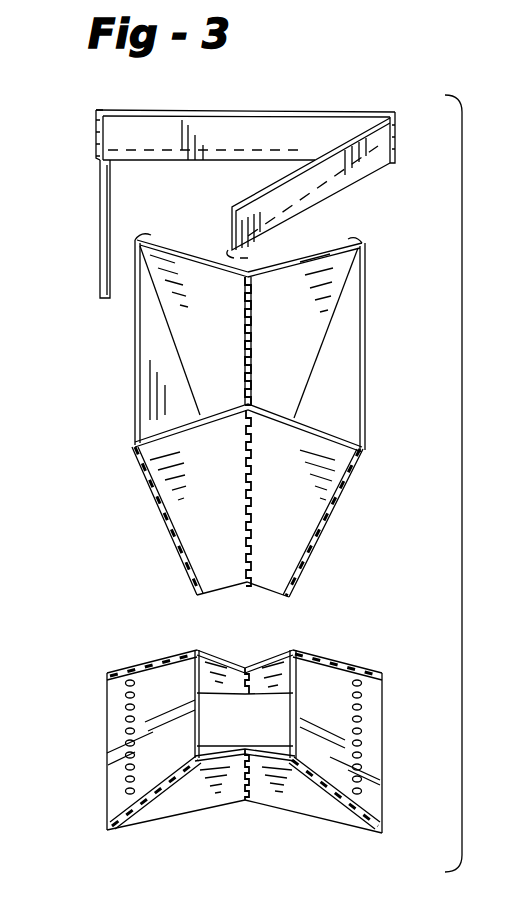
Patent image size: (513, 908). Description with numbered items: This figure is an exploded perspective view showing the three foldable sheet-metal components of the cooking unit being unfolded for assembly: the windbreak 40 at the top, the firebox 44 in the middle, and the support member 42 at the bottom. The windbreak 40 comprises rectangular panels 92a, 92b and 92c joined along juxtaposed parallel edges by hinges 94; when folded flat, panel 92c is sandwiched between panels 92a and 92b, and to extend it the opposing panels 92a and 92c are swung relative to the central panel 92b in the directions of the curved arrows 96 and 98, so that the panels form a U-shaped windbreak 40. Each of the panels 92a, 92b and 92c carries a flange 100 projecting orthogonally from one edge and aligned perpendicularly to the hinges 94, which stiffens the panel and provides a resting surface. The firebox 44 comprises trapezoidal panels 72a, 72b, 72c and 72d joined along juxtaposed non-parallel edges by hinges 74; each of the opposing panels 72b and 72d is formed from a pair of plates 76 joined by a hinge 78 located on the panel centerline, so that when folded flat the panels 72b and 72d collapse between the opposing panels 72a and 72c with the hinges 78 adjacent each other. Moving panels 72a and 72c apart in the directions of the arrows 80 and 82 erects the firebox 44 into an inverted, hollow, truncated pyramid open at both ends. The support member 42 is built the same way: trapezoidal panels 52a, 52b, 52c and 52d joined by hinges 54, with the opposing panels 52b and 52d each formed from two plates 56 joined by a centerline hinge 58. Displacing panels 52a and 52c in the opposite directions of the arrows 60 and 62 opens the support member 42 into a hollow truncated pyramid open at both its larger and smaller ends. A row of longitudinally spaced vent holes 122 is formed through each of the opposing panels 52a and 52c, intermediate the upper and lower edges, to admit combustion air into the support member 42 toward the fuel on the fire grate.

The windbreak 40 is at (298, 105).
The panel 92a is at (97, 218).
The panel 92b is at (150, 128).
The panel 92c is at (376, 148).
The hinges 94 is at (95, 125).
The curved arrow 96 is at (118, 211).
The curved arrow 98 is at (245, 185).
The flanges 100 is at (248, 152).
The firebox 44 is at (135, 513).
The panel 72a is at (150, 401).
The panel 72b is at (328, 268).
The panel 72c is at (368, 322).
The panel 72d is at (292, 545).
The hinges 74 is at (162, 238).
The plates 76 is at (275, 352).
The hinge 78 is at (253, 332).
The arrow 80 is at (110, 368).
The arrow 82 is at (420, 372).
The support member 42 is at (128, 645).
The panel 52a is at (108, 793).
The panel 52b is at (228, 655).
The panel 52c is at (380, 785).
The panel 52d is at (300, 815).
The hinges 54 is at (117, 672).
The plates 56 is at (230, 688).
The hinge 58 is at (262, 678).
The arrow 60 is at (110, 720).
The arrow 62 is at (378, 722).
The vent holes 122 is at (125, 762).